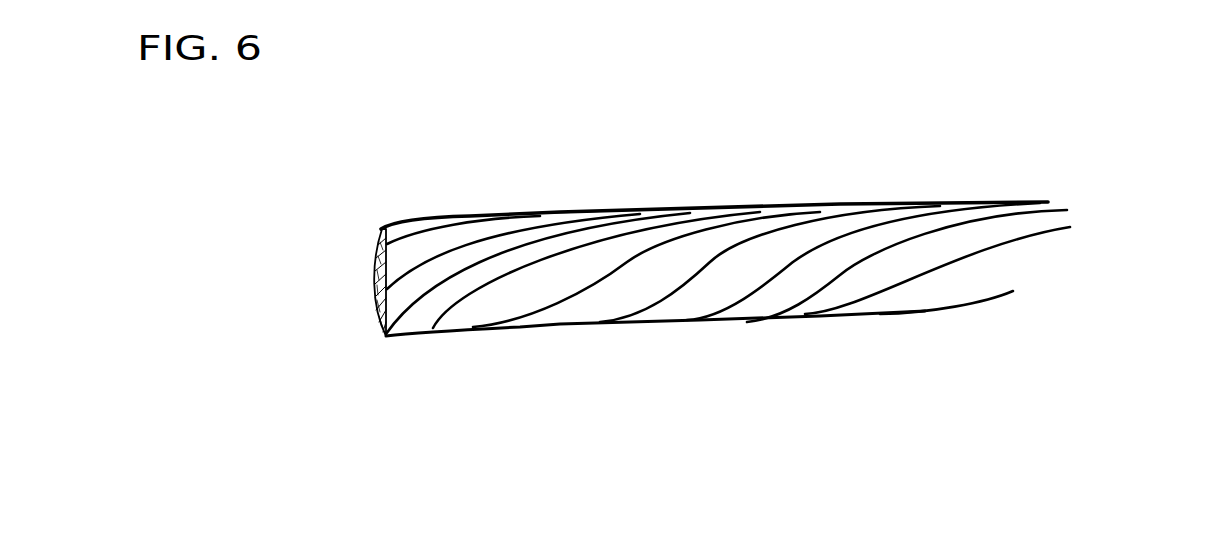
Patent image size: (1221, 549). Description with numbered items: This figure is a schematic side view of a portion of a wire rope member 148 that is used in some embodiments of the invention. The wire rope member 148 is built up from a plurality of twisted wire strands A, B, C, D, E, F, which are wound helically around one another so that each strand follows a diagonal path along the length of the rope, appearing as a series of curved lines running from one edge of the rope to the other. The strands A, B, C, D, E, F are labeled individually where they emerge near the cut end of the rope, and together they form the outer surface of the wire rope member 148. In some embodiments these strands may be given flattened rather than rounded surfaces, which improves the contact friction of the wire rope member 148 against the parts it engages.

The wire rope member 148 is at (745, 169).
The wire strand A is at (392, 221).
The wire strand B is at (405, 255).
The wire strand C is at (407, 293).
The wire strand D is at (441, 302).
The wire strand E is at (510, 302).
The wire strand F is at (580, 302).